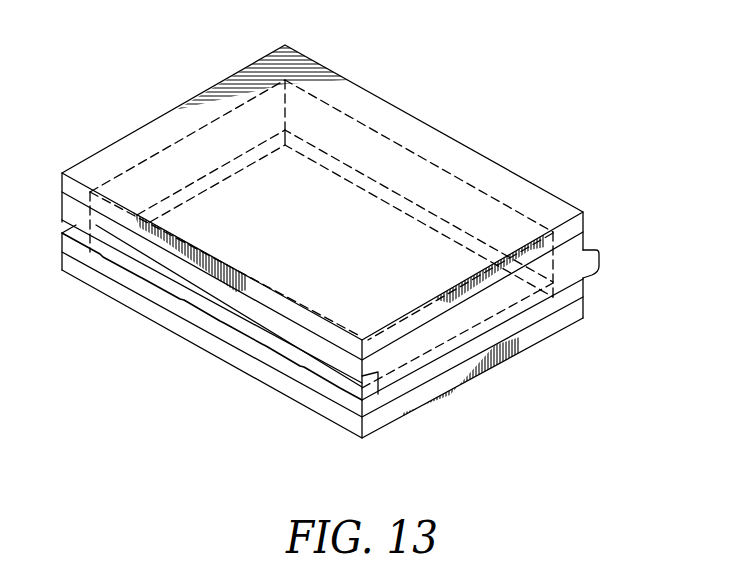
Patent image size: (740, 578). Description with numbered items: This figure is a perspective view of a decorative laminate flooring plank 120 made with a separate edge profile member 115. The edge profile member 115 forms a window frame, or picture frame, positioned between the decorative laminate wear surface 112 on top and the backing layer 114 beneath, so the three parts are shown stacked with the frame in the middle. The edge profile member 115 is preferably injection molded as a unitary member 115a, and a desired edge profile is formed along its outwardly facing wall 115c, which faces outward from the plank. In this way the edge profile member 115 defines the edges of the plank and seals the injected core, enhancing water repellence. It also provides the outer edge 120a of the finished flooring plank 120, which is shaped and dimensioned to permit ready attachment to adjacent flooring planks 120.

The flooring plank 120 is at (96, 128).
The decorative laminate wear surface 112 is at (236, 80).
The edge profile member 115 is at (308, 340).
The unitary member 115a is at (588, 279).
The outwardly facing wall 115c is at (222, 332).
The outer edge 120a is at (70, 262).
The backing layer 114 is at (458, 368).